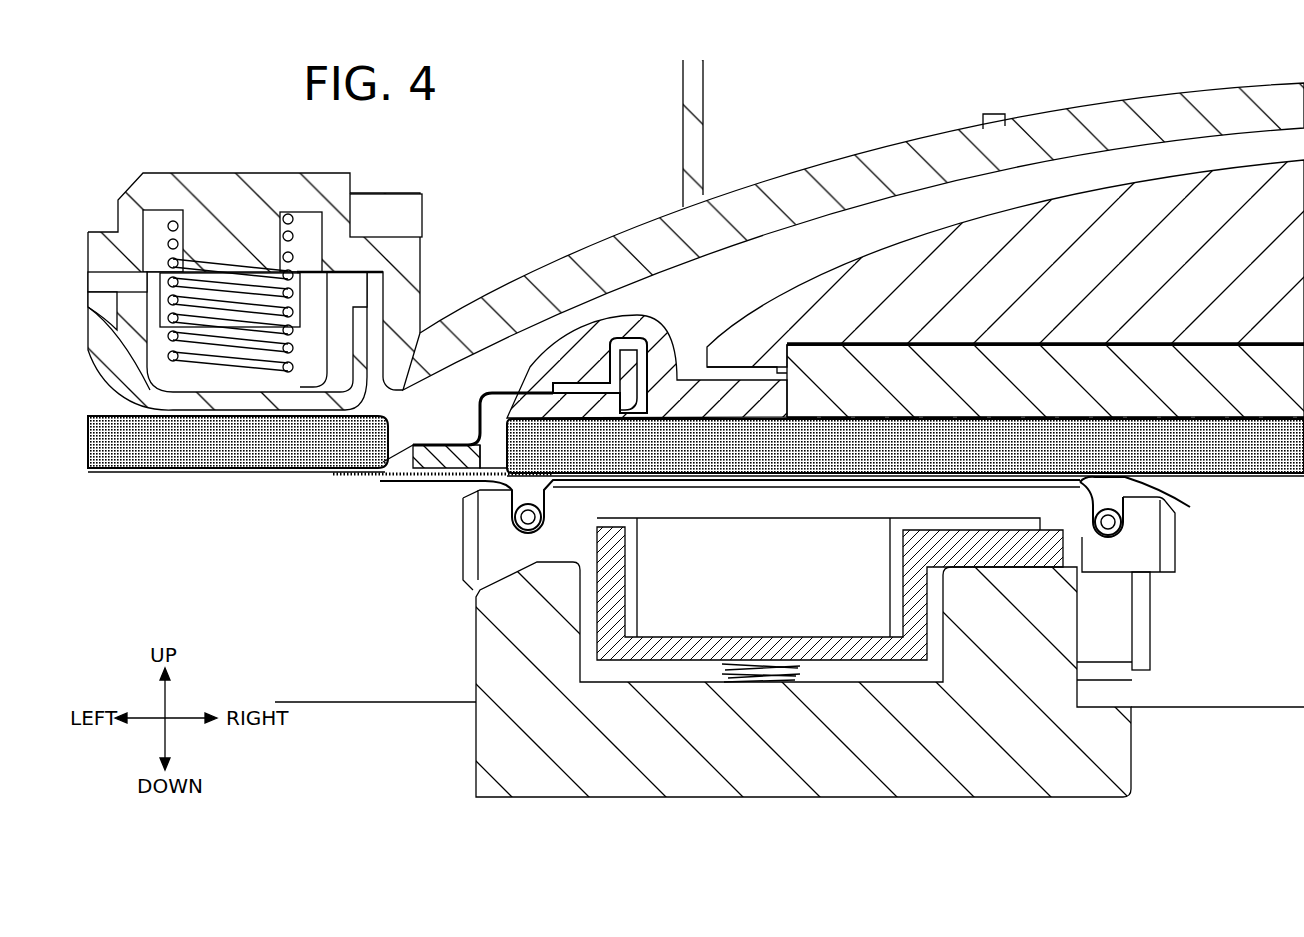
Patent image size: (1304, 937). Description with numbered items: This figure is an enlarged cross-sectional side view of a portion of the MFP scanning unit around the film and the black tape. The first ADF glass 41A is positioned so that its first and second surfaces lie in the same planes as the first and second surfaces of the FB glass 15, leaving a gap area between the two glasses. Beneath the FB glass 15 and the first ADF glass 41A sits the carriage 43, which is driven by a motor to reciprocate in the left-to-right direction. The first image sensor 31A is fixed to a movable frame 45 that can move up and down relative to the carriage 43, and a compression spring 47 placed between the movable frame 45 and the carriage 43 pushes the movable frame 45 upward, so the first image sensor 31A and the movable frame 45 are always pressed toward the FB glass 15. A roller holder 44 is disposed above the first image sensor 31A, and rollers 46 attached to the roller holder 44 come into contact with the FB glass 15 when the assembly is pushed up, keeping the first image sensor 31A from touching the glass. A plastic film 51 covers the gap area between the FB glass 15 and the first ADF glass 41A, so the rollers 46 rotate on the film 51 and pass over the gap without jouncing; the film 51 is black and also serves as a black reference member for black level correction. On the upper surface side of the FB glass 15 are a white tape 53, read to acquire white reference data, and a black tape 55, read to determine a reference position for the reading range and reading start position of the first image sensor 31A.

The FB glass 15 is at (1265, 480).
The first image sensor 31A is at (817, 620).
The first ADF glass 41A is at (165, 470).
The carriage 43 is at (476, 736).
The roller holder 44 is at (462, 547).
The movable frame 45 is at (660, 650).
The rollers 46 is at (497, 479).
The compression spring 47 is at (735, 684).
The film 51 is at (360, 475).
The white tape 53 is at (590, 395).
The black tape 55 is at (687, 417).